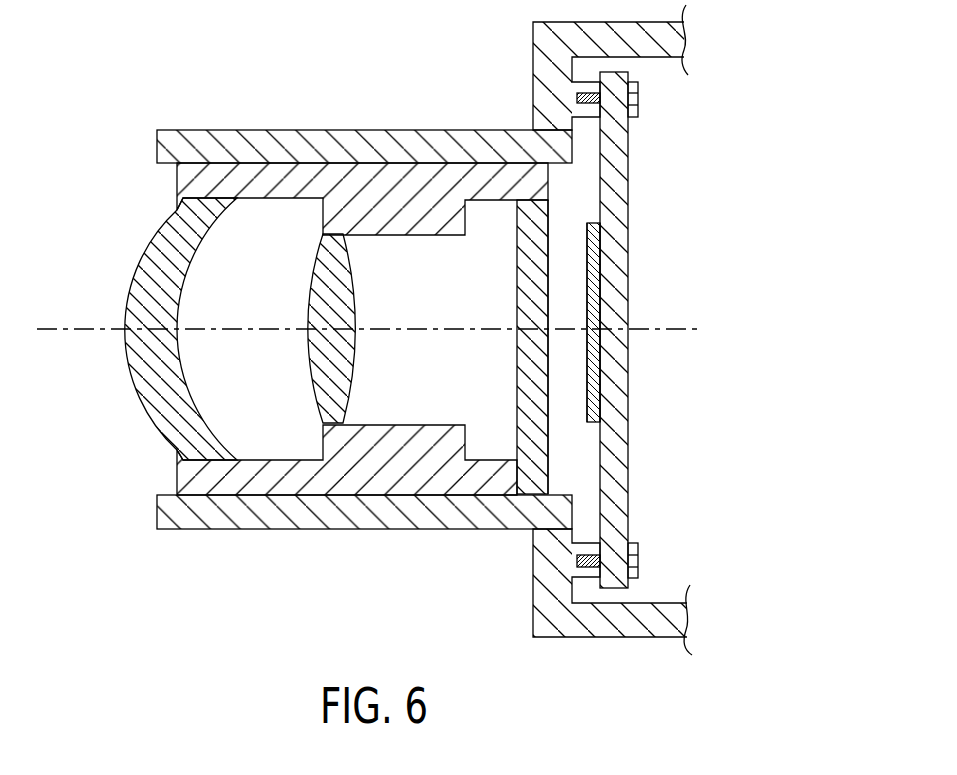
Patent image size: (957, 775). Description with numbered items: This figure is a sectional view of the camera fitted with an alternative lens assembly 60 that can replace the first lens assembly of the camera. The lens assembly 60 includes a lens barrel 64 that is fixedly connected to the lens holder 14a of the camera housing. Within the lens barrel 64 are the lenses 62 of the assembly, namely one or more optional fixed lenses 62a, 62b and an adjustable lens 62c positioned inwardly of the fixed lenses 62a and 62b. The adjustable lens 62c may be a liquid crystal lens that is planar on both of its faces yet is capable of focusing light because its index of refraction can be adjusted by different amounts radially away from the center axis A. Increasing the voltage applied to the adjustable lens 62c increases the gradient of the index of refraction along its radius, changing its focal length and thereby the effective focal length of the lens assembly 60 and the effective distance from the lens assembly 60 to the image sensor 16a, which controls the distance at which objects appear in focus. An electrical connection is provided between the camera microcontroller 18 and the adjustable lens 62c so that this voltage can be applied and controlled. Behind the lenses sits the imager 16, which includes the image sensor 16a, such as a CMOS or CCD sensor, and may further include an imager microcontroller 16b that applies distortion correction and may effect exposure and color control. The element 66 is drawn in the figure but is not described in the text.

The lens assembly 60 is at (317, 336).
The lens holder 14a is at (405, 142).
The lens barrel 64 is at (232, 478).
The lenses 62 is at (305, 346).
The fixed lens 62a is at (155, 395).
The fixed lens 62b is at (325, 380).
The adjustable lens 62c is at (537, 382).
The spacer / gap 66 is at (548, 230).
The camera microcontroller 18 is at (630, 193).
The imager 16 is at (629, 319).
The image sensor 16a is at (593, 310).
The imager microcontroller 16b is at (593, 243).
The center axis A is at (690, 325).